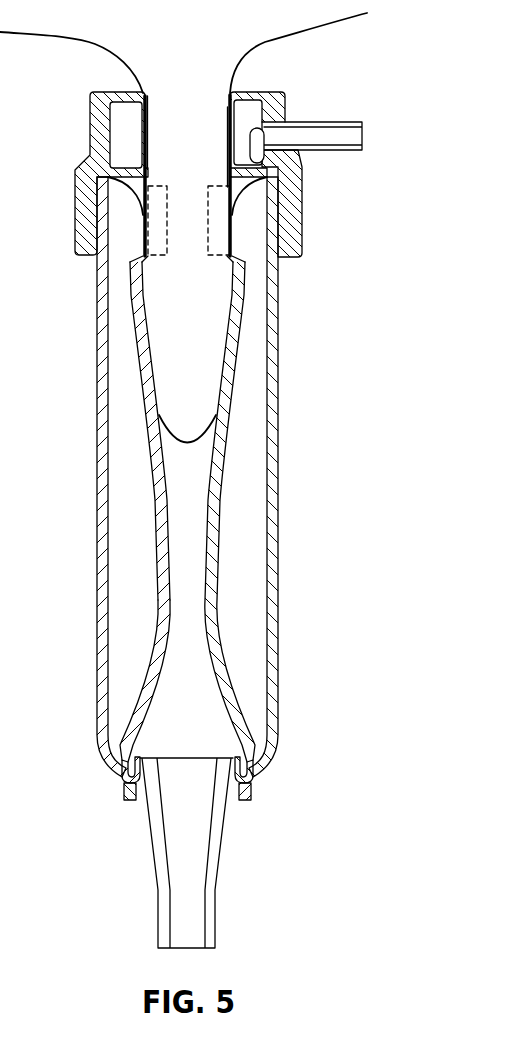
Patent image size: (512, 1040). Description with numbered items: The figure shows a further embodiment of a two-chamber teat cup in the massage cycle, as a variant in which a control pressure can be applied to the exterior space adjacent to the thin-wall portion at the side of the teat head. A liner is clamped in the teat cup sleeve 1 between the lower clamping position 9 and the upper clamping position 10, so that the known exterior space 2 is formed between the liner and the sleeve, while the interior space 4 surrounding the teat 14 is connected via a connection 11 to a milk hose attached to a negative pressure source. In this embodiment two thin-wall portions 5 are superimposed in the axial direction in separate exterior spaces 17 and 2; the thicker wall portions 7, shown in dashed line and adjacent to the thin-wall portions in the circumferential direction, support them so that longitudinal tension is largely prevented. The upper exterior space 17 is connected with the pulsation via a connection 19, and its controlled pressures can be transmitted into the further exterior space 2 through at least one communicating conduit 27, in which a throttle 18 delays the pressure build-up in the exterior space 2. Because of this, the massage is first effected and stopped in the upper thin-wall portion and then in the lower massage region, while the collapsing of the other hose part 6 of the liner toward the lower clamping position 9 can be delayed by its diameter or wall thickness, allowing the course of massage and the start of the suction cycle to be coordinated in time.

The teat cup sleeve 1 is at (279, 447).
The exterior space 2 is at (245, 551).
The interior space 4 is at (178, 627).
The thin-wall portion 5 is at (146, 119).
The hose part 6 is at (159, 542).
The thicker wall portion 7 is at (188, 200).
The lower clamping position 9 is at (122, 781).
The upper clamping position 10 is at (80, 171).
The connection 11 is at (225, 850).
The teat 14 is at (197, 374).
The exterior space 17 is at (247, 113).
The throttle 18 is at (252, 155).
The connection 19 is at (358, 117).
The communicating conduit 27 is at (258, 172).